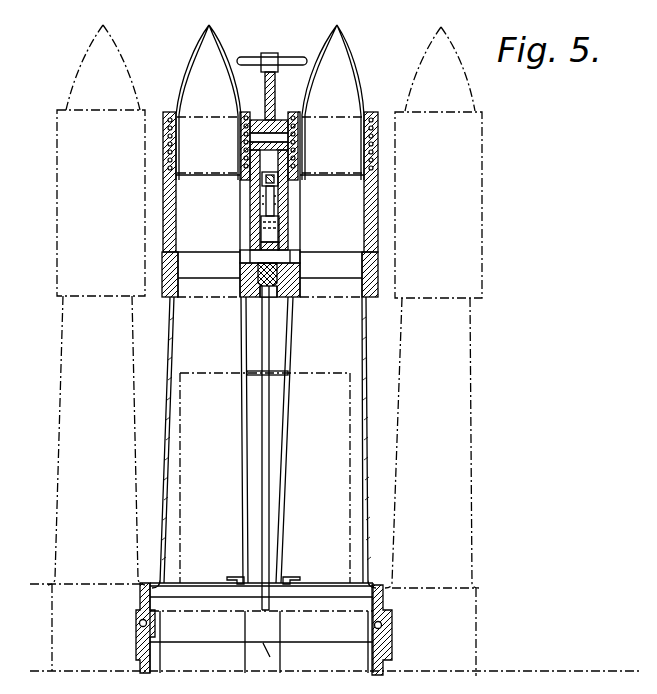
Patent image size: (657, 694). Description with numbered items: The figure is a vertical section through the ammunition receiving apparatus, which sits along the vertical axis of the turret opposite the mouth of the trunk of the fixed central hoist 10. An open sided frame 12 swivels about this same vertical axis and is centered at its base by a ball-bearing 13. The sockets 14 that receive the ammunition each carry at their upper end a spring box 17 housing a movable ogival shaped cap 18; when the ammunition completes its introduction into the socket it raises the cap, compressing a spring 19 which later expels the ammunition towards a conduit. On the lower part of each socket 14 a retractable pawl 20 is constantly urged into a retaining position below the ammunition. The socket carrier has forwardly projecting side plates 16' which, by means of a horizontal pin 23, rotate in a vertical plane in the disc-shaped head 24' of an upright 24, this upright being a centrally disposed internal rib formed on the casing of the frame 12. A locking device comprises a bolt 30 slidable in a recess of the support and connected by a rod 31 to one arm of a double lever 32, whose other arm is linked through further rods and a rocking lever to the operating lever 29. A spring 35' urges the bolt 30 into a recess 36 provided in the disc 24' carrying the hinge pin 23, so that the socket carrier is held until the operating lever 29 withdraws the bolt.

The central hoist 10 is at (380, 679).
The open sided frame 12 is at (372, 591).
The ball-bearing 13 is at (386, 627).
The socket 14 is at (172, 352).
The side plates 16' is at (277, 311).
The spring box 17 is at (166, 128).
The ogival shaped cap 18 is at (203, 52).
The spring 19 is at (171, 149).
The retractable pawl 20 is at (233, 581).
The horizontal pin 23 is at (240, 279).
The upright 24 is at (248, 448).
The disc-shaped head 24' is at (289, 281).
The operating lever 29 is at (272, 63).
The bolt 30 is at (249, 227).
The rod 31 is at (291, 201).
The double lever 32 is at (272, 172).
The valve rod 35' is at (241, 201).
The recess 36 is at (276, 241).